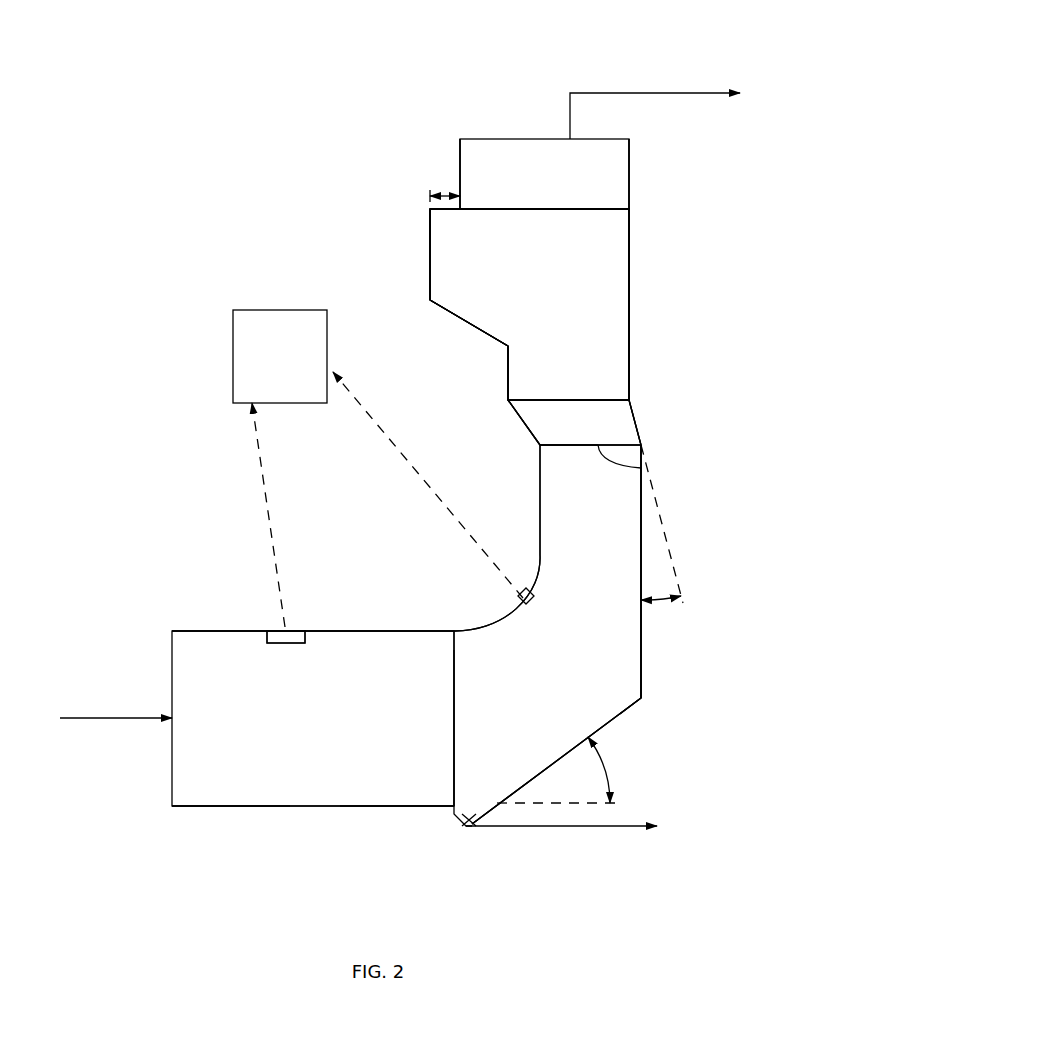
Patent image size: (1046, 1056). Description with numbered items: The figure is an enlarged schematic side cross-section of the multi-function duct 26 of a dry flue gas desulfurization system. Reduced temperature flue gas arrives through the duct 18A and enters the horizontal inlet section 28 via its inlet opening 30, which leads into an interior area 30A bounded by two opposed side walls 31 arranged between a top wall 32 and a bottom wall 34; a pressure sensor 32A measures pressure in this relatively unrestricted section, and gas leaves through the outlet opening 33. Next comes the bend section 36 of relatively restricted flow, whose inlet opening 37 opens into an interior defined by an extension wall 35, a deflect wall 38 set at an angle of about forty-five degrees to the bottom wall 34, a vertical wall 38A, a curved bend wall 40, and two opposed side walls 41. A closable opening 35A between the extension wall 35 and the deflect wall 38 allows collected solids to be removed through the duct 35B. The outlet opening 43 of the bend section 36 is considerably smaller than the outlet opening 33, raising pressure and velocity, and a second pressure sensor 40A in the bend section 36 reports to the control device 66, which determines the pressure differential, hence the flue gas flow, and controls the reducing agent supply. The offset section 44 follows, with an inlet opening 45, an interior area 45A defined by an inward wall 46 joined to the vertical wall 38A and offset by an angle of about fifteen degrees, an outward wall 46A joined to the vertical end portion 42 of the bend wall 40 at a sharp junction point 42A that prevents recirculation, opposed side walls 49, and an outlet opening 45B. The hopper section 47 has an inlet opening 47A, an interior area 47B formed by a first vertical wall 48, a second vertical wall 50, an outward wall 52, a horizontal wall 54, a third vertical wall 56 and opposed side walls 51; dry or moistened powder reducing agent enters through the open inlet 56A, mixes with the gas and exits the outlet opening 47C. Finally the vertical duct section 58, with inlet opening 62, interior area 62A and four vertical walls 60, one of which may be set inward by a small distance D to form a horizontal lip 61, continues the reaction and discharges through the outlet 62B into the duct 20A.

The multi-function duct 26 is at (285, 90).
The duct 18A is at (100, 718).
The duct 20A is at (657, 93).
The horizontal inlet section 28 is at (290, 620).
The inlet opening 30 is at (172, 683).
The interior area 30A is at (230, 806).
The side walls 31 is at (390, 806).
The top wall 32 is at (376, 631).
The pressure sensor 32A is at (284, 643).
The outlet opening 33 is at (454, 665).
The bottom wall 34 is at (310, 806).
The extension wall 35 is at (455, 812).
The closable opening 35A is at (475, 826).
The duct 35B is at (560, 826).
The bend section 36 is at (672, 635).
The inlet opening 37 is at (456, 684).
The deflect wall 38 is at (545, 775).
The vertical wall 38A is at (643, 658).
The bend wall 40 is at (468, 626).
The pressure sensor 40A is at (536, 600).
The side walls 41 is at (625, 692).
The vertical end portion 42 is at (540, 500).
The junction point 42A is at (540, 445).
The outlet opening 43 is at (633, 470).
The offset section 44 is at (683, 393).
The inlet opening 45 is at (575, 438).
The interior area 45A is at (573, 398).
The outlet opening 45B is at (590, 400).
The inward wall 46 is at (640, 408).
The outward wall 46A is at (512, 404).
The hopper section 47 is at (672, 318).
The inlet opening 47A is at (532, 395).
The interior area 47B is at (617, 252).
The outlet opening 47C is at (525, 211).
The first vertical wall 48 is at (629, 294).
The side walls 49 is at (610, 438).
The second vertical wall 50 is at (508, 374).
The side walls 51 is at (615, 330).
The outward wall 52 is at (503, 334).
The horizontal wall 54 is at (433, 302).
The third vertical wall 56 is at (430, 292).
The open inlet 56A is at (432, 270).
The vertical duct section 58 is at (660, 180).
The vertical walls 60 is at (460, 160).
The horizontal lip 61 is at (432, 223).
The inlet opening 62 is at (570, 207).
The interior area 62A is at (615, 148).
The outlet 62B is at (497, 141).
The control device 66 is at (283, 310).
The distance D is at (432, 188).